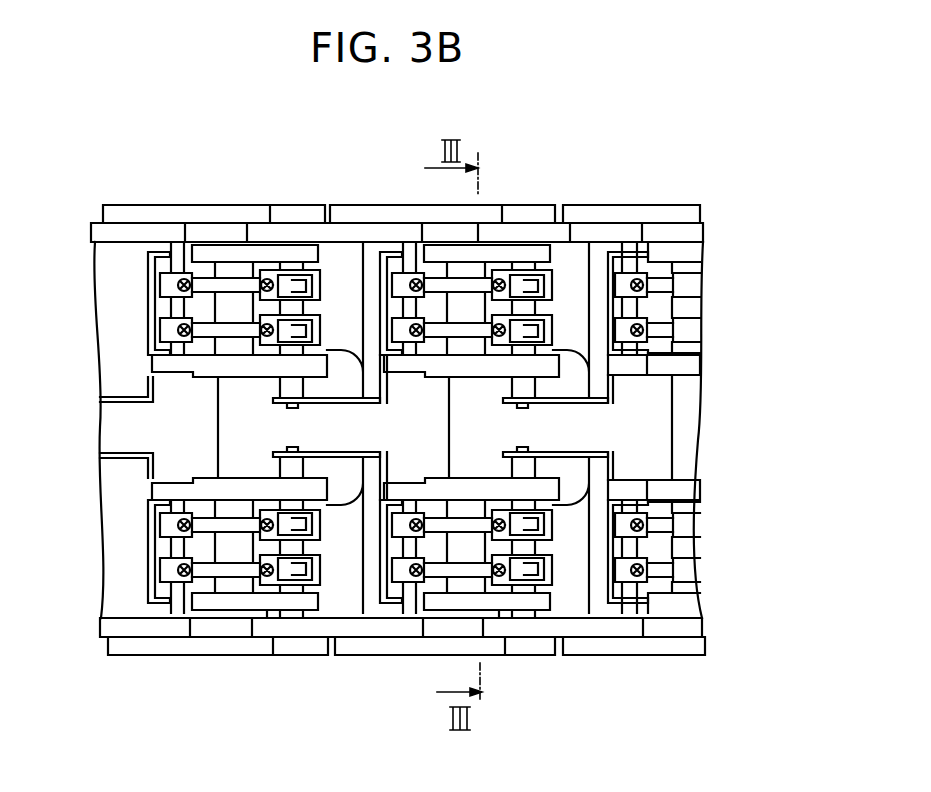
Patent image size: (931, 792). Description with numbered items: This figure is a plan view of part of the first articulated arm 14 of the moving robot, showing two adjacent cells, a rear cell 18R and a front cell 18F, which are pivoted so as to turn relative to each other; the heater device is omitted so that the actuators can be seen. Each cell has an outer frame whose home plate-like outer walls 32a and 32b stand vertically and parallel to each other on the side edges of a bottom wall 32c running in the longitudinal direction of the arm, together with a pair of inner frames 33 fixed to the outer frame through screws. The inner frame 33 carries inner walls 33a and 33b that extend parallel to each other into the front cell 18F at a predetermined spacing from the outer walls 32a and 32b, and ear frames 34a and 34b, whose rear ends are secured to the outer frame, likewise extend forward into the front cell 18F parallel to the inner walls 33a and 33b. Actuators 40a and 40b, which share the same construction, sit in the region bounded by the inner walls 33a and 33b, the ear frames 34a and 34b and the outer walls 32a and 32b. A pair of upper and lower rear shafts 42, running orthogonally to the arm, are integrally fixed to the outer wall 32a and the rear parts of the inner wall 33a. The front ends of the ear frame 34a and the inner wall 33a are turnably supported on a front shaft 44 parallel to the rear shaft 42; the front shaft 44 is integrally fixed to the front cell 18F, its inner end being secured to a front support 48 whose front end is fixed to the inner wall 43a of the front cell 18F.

The first articulated arm 14 is at (313, 658).
The rear cell 18R is at (345, 215).
The front cell 18F is at (599, 238).
The outer wall 32a is at (357, 622).
The outer wall 32b is at (445, 236).
The bottom wall 32c is at (549, 606).
The inner frame 33 is at (388, 596).
The inner wall 33a is at (433, 490).
The inner wall 33b is at (392, 245).
The ear frame 34a is at (442, 610).
The ear frame 34b is at (482, 248).
The actuator 40a is at (565, 560).
The actuator 40b is at (561, 287).
The rear shaft 42 is at (390, 306).
The inner wall of the front cell 43a is at (688, 370).
The front shaft 44 is at (510, 387).
The front support 48 is at (612, 383).